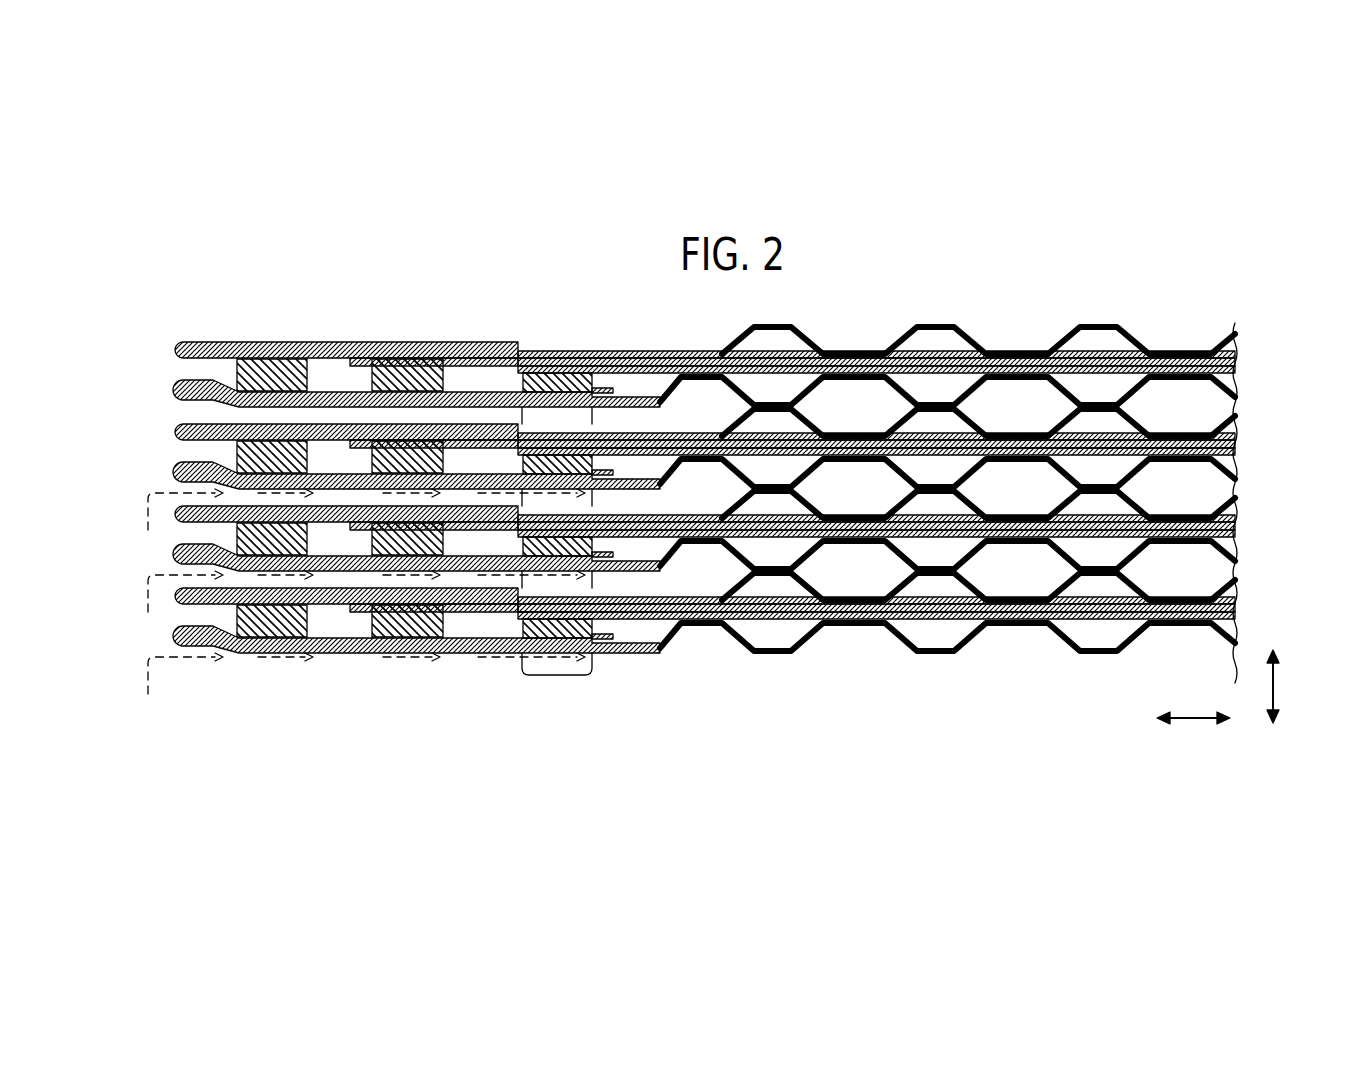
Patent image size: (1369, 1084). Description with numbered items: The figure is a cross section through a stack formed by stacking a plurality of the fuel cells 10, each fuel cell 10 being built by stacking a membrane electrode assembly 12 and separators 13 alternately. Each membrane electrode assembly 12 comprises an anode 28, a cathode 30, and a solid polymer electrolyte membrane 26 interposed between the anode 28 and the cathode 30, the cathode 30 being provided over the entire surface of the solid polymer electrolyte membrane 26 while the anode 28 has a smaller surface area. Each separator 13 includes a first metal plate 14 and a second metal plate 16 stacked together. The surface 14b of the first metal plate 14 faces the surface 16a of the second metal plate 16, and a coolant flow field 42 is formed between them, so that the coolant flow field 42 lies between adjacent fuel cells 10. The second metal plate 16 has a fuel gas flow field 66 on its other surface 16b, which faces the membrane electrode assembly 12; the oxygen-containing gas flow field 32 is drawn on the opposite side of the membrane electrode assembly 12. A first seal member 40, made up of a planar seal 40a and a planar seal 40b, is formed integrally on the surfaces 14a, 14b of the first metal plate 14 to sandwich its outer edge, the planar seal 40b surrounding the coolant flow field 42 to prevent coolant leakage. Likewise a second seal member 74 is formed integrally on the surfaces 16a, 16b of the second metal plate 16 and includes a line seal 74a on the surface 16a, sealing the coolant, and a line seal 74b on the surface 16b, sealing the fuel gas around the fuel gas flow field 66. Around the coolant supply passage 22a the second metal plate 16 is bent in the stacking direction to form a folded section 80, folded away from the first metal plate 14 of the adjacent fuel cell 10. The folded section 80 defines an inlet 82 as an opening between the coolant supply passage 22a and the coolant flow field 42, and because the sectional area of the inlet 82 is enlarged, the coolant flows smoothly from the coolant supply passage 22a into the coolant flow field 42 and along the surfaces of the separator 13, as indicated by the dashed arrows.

The fuel cell 10 is at (983, 279).
The membrane electrode assembly 12 is at (1305, 322).
The separator 13 is at (1290, 470).
The first metal plate 14 is at (1222, 500).
The surface of the first metal plate 14a is at (663, 640).
The surface of the first metal plate 14b is at (690, 592).
The second metal plate 16 is at (1226, 549).
The surface of the second metal plate 16a is at (628, 478).
The surface of the second metal plate 16b is at (633, 433).
The coolant supply passage 22a is at (333, 702).
The solid polymer electrolyte membrane 26 is at (1237, 368).
The anode 28 is at (1237, 374).
The cathode 30 is at (1237, 362).
The oxygen-containing gas flow field 32 is at (1165, 343).
The first seal member 40 is at (120, 322).
The planar seal 40a is at (198, 373).
The planar seal 40b is at (197, 343).
The coolant flow field 42 is at (1103, 627).
The fuel gas flow field 66 is at (1170, 388).
The second seal member 74 is at (160, 632).
The line seal 74a is at (552, 665).
The line seal 74b is at (490, 650).
The folded section 80 is at (173, 472).
The inlet 82 is at (178, 485).